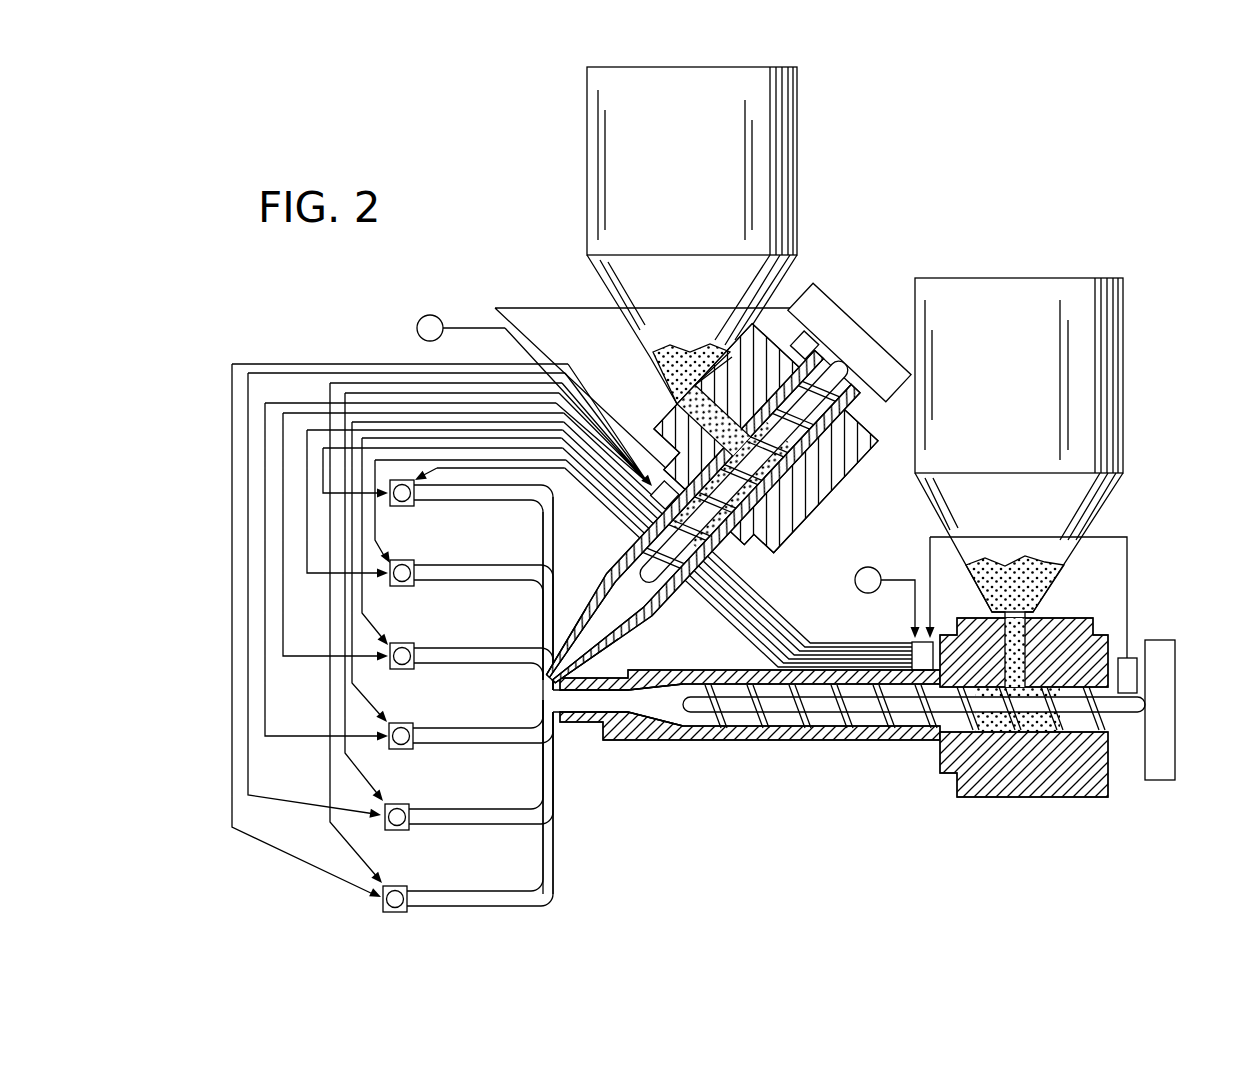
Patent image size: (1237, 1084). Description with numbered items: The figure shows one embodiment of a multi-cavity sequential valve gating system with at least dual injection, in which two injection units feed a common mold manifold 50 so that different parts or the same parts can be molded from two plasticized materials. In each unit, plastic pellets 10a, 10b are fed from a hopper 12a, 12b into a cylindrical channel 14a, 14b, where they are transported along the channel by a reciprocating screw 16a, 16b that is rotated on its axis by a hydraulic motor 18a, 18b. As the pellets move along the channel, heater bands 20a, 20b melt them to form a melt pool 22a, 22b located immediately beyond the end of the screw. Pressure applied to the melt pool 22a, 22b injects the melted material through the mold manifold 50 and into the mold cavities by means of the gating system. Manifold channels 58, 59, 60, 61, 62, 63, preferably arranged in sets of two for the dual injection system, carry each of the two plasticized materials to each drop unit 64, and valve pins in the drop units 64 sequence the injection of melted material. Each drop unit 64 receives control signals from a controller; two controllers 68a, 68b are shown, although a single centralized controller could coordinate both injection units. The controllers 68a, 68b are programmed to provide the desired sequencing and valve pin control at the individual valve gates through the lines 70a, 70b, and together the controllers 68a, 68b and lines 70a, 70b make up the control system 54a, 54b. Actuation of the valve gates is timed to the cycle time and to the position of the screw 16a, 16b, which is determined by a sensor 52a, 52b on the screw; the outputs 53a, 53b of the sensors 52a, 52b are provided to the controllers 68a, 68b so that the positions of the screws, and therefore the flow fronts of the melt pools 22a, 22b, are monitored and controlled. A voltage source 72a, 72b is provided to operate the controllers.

The plastic pellets 10a is at (1028, 580).
The plastic pellets 10b is at (660, 360).
The hopper 12a is at (1123, 352).
The hopper 12b is at (797, 115).
The cylindrical channel 14a is at (742, 745).
The cylindrical channel 14b is at (698, 550).
The reciprocating screw 16a is at (875, 742).
The reciprocating screw 16b is at (805, 452).
The hydraulic motor 18a is at (1160, 782).
The hydraulic motor 18b is at (818, 287).
The heater bands 20a is at (790, 742).
The heater bands 20b is at (775, 495).
The melt pool 22a is at (618, 705).
The melt pool 22b is at (632, 655).
The mold manifold 50 is at (568, 832).
The sensor 52a is at (1137, 660).
The sensor 52b is at (812, 340).
The sensor output 53a is at (1127, 540).
The sensor output 53b is at (812, 287).
The control system 54a is at (762, 625).
The control system 54b is at (208, 612).
The manifold channel 58 is at (500, 510).
The manifold channel 59 is at (500, 590).
The manifold channel 60 is at (500, 670).
The manifold channel 61 is at (482, 745).
The manifold channel 62 is at (485, 812).
The manifold channel 63 is at (505, 888).
The drop unit 64 is at (408, 508).
The controller 68a is at (910, 645).
The controller 68b is at (660, 482).
The lines 70a is at (530, 375).
The lines 70b is at (225, 468).
The voltage source 72a is at (888, 560).
The voltage source 72b is at (418, 322).